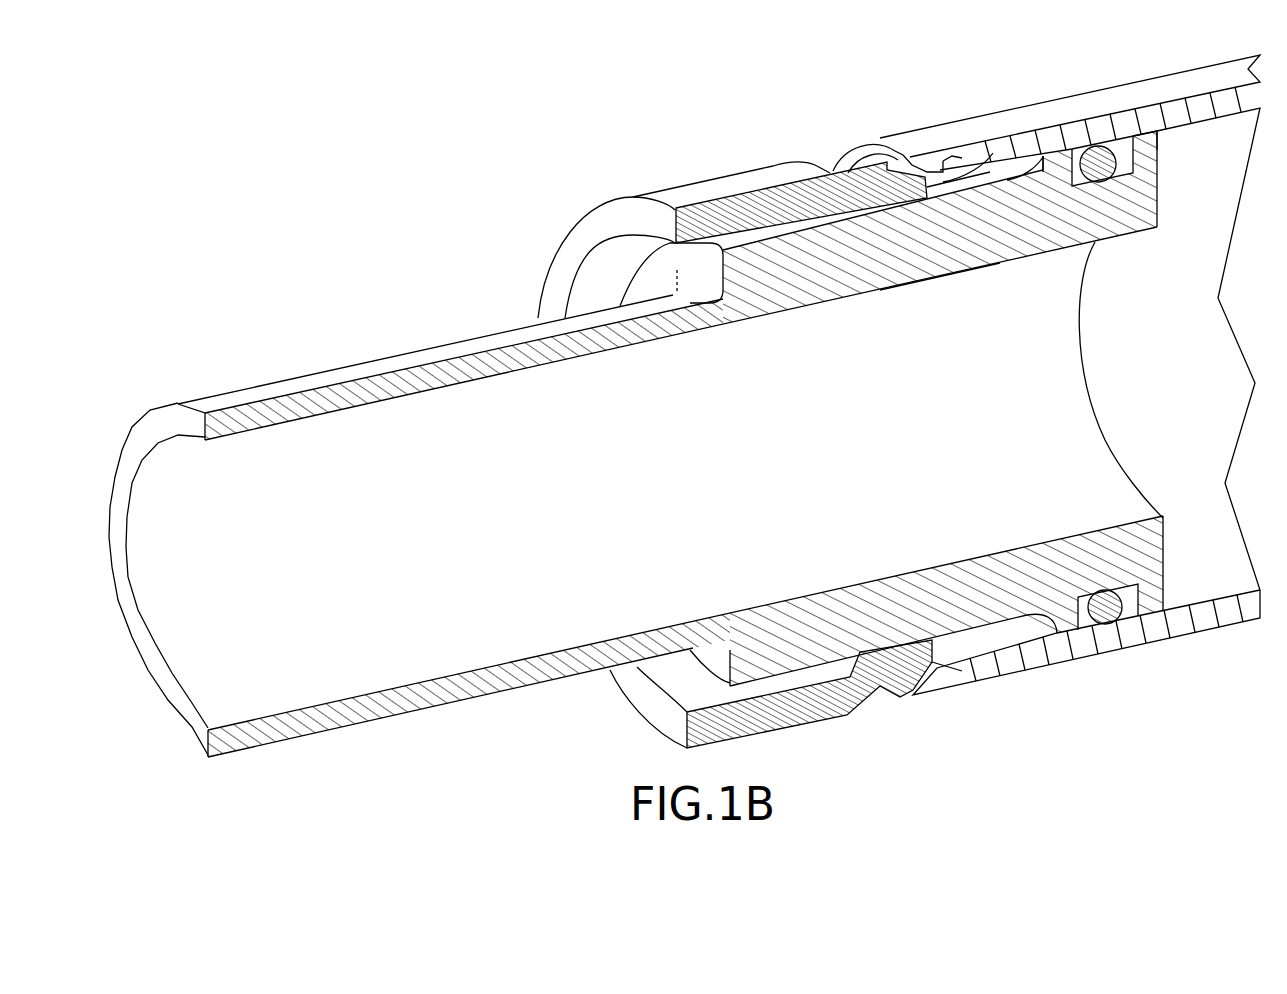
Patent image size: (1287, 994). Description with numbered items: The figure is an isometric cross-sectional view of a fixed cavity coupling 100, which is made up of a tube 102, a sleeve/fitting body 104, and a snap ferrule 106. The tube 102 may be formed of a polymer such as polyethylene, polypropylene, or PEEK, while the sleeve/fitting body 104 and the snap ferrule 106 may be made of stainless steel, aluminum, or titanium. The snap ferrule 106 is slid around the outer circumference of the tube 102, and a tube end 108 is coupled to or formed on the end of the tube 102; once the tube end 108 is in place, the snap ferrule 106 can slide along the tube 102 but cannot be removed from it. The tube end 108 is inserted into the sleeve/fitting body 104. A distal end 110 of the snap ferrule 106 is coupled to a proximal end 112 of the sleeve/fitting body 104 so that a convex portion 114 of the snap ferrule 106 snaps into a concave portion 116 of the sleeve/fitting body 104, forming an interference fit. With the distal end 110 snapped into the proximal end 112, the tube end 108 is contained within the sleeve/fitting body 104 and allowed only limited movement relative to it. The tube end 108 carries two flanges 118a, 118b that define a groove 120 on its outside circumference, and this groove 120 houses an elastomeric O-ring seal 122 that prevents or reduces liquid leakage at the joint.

The fixed cavity coupling 100 is at (238, 142).
The tube 102 is at (340, 370).
The sleeve/fitting body 104 is at (1025, 110).
The snap ferrule 106 is at (705, 188).
The tube end 108 is at (1163, 206).
The distal end 110 is at (928, 212).
The proximal end 112 is at (916, 150).
The convex portion 114 is at (886, 160).
The concave portion 116 is at (960, 150).
The flange 118a is at (1059, 150).
The flange 118b is at (1160, 128).
The groove 120 is at (1123, 133).
The elastomeric O-ring seal 122 is at (1124, 163).